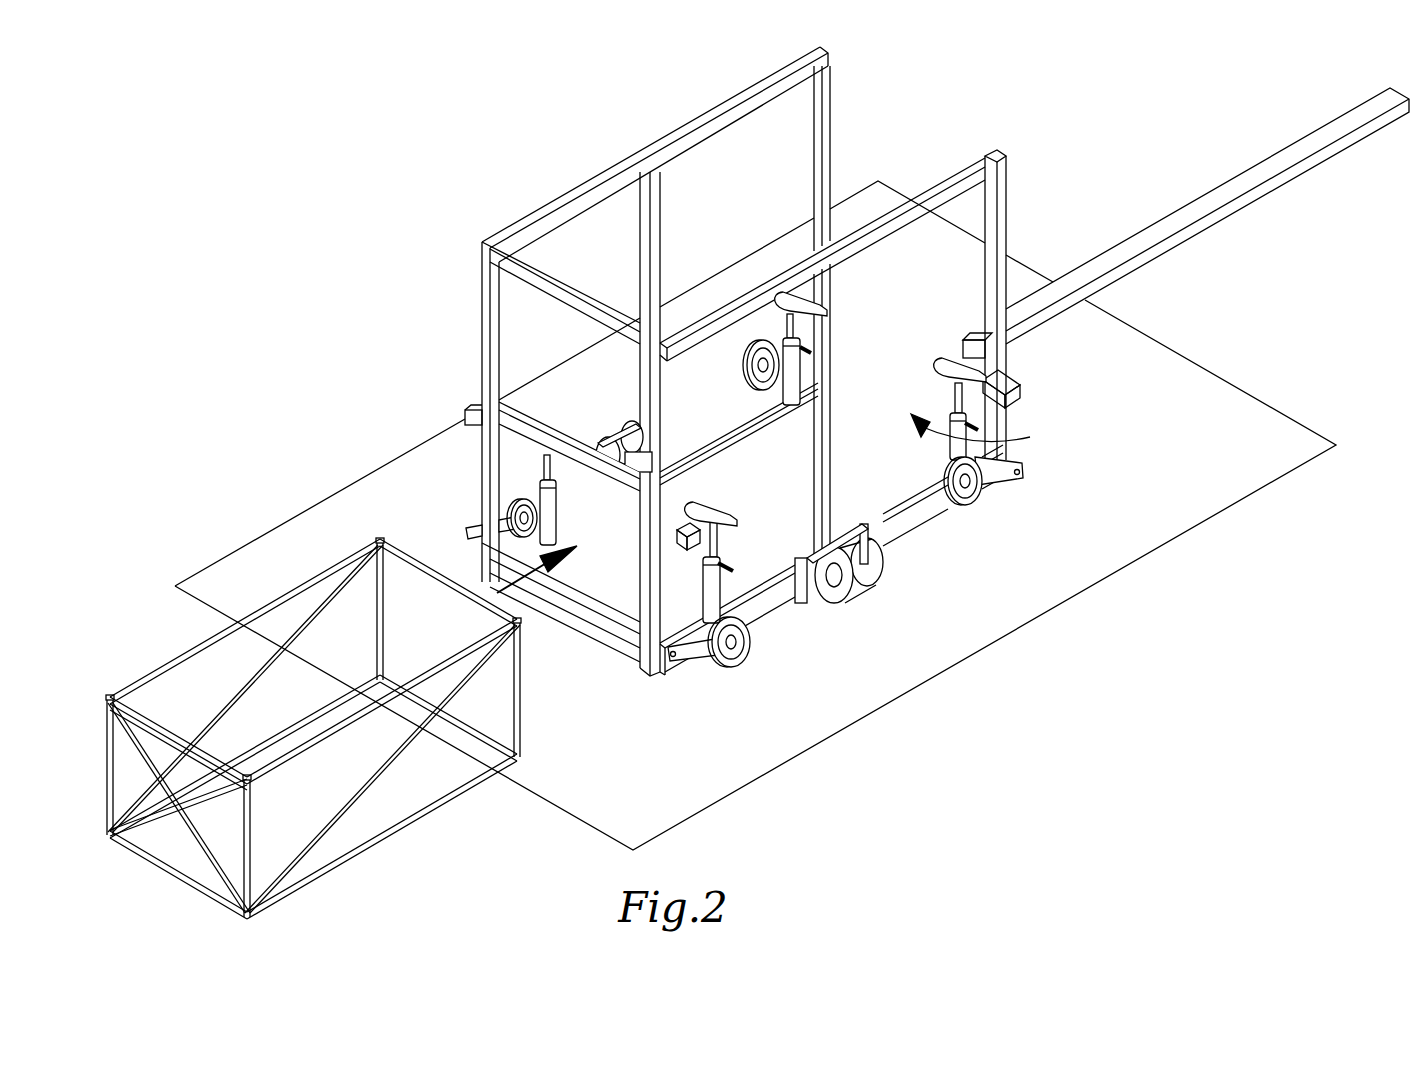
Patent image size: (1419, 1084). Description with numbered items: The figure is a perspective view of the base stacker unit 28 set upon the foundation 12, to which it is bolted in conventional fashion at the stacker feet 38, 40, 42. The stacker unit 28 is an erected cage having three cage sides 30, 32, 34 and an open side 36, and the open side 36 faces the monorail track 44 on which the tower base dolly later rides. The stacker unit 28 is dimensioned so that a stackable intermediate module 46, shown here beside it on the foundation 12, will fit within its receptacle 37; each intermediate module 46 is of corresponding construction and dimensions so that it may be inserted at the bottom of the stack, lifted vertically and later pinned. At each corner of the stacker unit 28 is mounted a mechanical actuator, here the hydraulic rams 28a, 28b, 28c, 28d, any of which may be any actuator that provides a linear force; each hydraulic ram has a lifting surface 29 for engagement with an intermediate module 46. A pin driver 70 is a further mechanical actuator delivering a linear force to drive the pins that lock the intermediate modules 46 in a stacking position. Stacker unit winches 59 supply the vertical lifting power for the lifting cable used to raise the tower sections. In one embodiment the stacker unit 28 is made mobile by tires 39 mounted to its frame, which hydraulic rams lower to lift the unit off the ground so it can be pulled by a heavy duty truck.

The foundation 12 is at (1232, 400).
The stacker unit 28 is at (284, 183).
The hydraulic ram 28a is at (953, 451).
The hydraulic ram 28b is at (720, 597).
The hydraulic ram 28c is at (558, 508).
The hydraulic ram 28d is at (797, 388).
The lifting surface 29 is at (806, 296).
The cage side 30 is at (986, 433).
The cage side 32 is at (517, 325).
The cage side 34 is at (630, 133).
The open side 36 is at (950, 110).
The receptacle 37 is at (648, 574).
The stacker foot 38 is at (912, 517).
The tire 39 is at (752, 366).
The stacker foot 40 is at (613, 645).
The stacker foot 42 is at (740, 430).
The monorail track 44 is at (1212, 200).
The intermediate module 46 is at (183, 664).
The stacker unit winch 59 is at (630, 440).
The pin driver 70 is at (1020, 365).